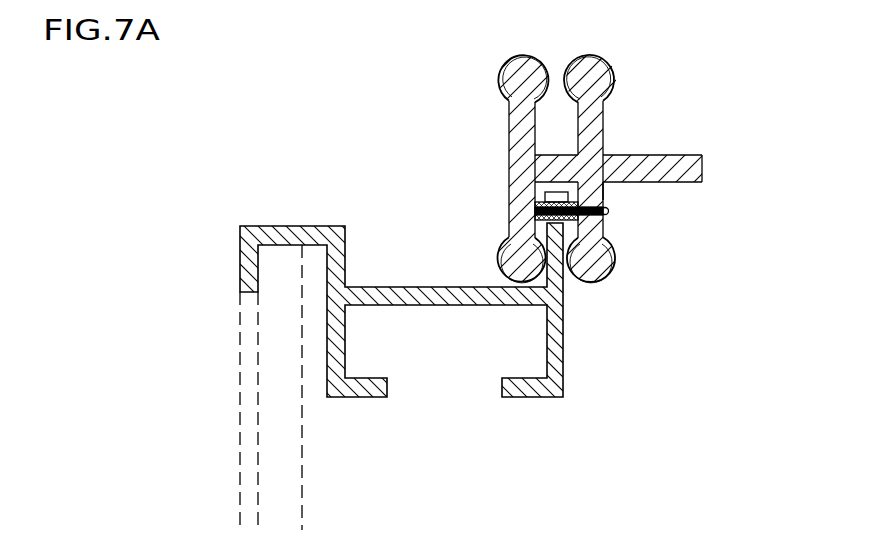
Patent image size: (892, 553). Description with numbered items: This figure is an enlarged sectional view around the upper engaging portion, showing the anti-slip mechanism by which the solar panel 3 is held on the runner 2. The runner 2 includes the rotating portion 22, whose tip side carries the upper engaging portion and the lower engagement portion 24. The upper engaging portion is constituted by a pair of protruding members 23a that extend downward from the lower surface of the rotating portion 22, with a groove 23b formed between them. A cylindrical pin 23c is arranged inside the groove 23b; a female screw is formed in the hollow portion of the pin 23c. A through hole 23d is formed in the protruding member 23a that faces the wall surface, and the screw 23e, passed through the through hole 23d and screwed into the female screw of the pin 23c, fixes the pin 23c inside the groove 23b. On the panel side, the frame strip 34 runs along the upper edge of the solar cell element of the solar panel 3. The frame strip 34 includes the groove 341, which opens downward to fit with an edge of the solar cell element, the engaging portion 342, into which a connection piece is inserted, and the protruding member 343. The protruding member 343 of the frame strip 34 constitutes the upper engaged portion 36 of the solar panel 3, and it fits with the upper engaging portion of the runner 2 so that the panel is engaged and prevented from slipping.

The runner 2 is at (581, 150).
The rotating portion 22 is at (683, 153).
The lower engagement portion 24 is at (620, 75).
The protruding members 23a is at (508, 257).
The groove 23b is at (610, 247).
The cylindrical pin 23c is at (547, 197).
The through hole 23d is at (607, 222).
The screw 23e is at (607, 198).
The solar panel 3 is at (428, 276).
The frame strip 34 is at (428, 276).
The groove 341 is at (258, 280).
The engaging portion 342 is at (523, 377).
The protruding member 343 is at (625, 310).
The upper engaged portion 36 is at (563, 297).